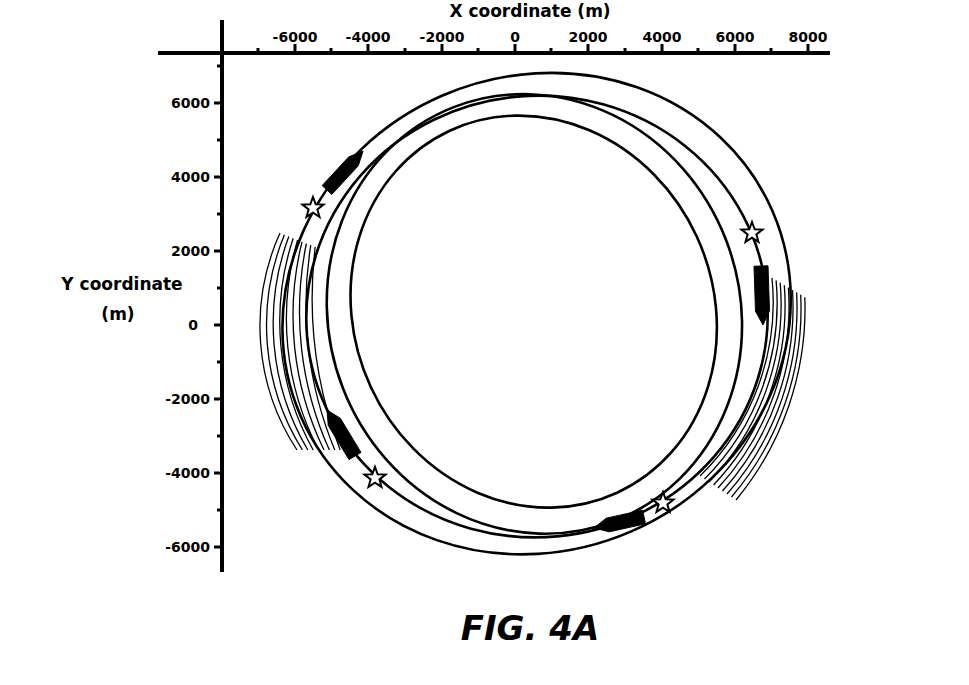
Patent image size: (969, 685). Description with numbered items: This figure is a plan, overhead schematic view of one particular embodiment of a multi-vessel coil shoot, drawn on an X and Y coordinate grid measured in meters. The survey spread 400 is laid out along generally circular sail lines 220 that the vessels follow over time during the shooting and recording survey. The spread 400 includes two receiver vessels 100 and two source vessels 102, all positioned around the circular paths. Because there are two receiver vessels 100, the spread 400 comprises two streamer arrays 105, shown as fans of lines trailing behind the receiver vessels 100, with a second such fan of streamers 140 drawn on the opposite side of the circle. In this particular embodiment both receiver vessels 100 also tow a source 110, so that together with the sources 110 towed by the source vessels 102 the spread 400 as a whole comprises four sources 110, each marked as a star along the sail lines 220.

The survey spread 400 is at (316, 93).
The receiver vessel 100 is at (334, 176).
The source vessel 102 is at (754, 292).
The source 110 is at (306, 201).
The streamer array 105 is at (276, 251).
The second fan of trajectories 140 is at (802, 339).
The orbit path 220 is at (760, 122).